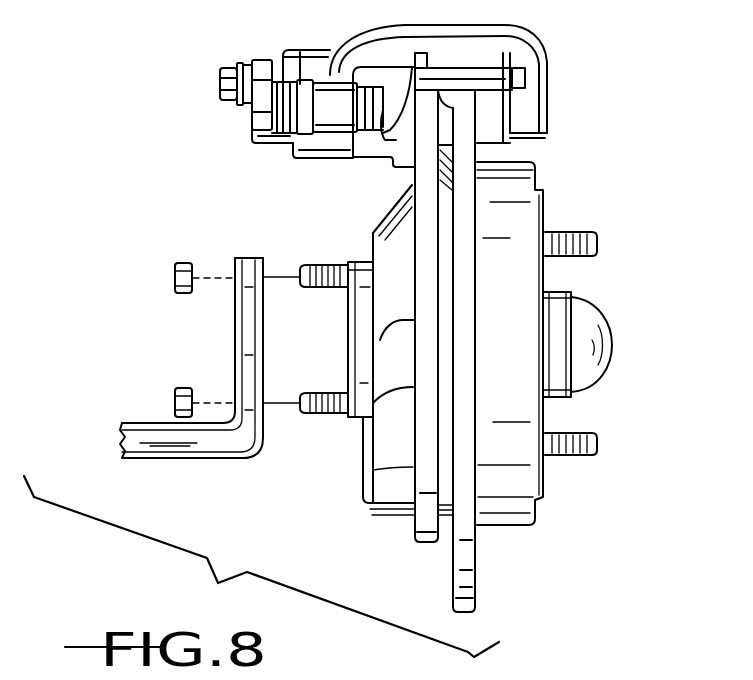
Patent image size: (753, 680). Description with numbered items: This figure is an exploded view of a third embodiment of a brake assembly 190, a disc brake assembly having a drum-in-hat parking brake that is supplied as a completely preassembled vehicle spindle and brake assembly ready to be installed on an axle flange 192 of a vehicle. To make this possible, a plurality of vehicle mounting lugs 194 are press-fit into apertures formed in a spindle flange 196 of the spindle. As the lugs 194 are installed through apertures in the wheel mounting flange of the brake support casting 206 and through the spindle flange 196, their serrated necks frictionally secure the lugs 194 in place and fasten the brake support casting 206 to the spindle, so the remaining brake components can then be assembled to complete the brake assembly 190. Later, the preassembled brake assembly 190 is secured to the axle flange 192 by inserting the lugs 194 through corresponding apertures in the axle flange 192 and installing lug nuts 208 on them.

The brake assembly 190 is at (588, 133).
The axle flange 192 is at (250, 258).
The vehicle mounting lugs 194 is at (316, 264).
The spindle flange 196 is at (349, 424).
The brake support casting 206 is at (376, 507).
The lug nuts 208 is at (180, 262).